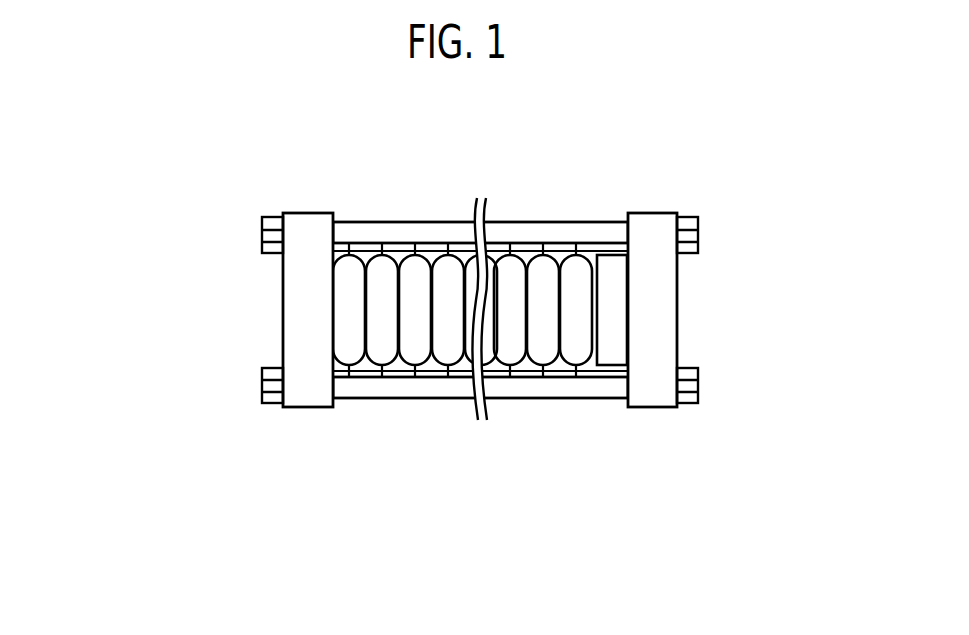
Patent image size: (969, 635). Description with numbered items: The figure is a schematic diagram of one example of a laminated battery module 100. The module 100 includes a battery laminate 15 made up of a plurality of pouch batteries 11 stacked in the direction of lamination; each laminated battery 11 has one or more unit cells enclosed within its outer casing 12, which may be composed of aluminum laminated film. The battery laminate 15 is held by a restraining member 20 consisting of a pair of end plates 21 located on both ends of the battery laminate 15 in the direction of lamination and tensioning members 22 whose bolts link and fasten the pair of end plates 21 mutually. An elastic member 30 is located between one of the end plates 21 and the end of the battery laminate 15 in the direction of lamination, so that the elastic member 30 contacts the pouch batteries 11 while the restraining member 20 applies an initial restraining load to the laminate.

The laminated battery module 100 is at (693, 160).
The pouch battery 11 is at (353, 353).
The outer casing 12 is at (480, 367).
The battery laminate 15 is at (480, 419).
The restraining member 20 is at (130, 137).
The end plate 21 is at (652, 328).
The tensioning member 22 is at (400, 233).
The elastic member 30 is at (613, 338).